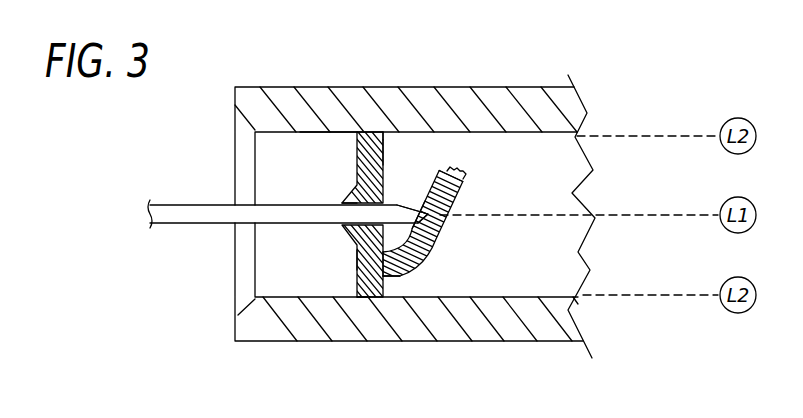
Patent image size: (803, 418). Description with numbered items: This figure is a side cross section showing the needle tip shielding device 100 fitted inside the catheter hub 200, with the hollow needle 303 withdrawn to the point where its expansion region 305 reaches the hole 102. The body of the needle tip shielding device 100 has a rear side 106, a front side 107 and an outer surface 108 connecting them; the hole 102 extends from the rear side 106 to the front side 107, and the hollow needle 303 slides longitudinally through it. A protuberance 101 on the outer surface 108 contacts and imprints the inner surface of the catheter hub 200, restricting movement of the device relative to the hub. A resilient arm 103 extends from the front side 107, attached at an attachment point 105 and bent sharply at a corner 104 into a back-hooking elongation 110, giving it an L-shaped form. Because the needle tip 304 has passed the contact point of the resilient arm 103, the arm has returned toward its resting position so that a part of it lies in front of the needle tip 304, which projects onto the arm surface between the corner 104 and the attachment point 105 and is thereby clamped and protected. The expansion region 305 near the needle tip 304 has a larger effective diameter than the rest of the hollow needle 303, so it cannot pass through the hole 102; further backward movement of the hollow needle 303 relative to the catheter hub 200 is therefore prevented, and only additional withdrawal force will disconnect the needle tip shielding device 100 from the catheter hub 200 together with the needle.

The catheter hub 200 is at (352, 100).
The hollow needle 303 is at (170, 203).
The protuberance 101 is at (367, 132).
The rear side 106 is at (323, 132).
The outer surface 108 is at (383, 132).
The front side 107 is at (385, 152).
The needle tip shielding device 100 is at (357, 258).
The hole 102 is at (336, 202).
The resilient arm 103 is at (456, 231).
The corner 104 is at (424, 203).
The back-hooking elongation 110 is at (461, 164).
The attachment point 105 is at (413, 261).
The expansion region 305 is at (389, 251).
The needle tip 304 is at (419, 216).